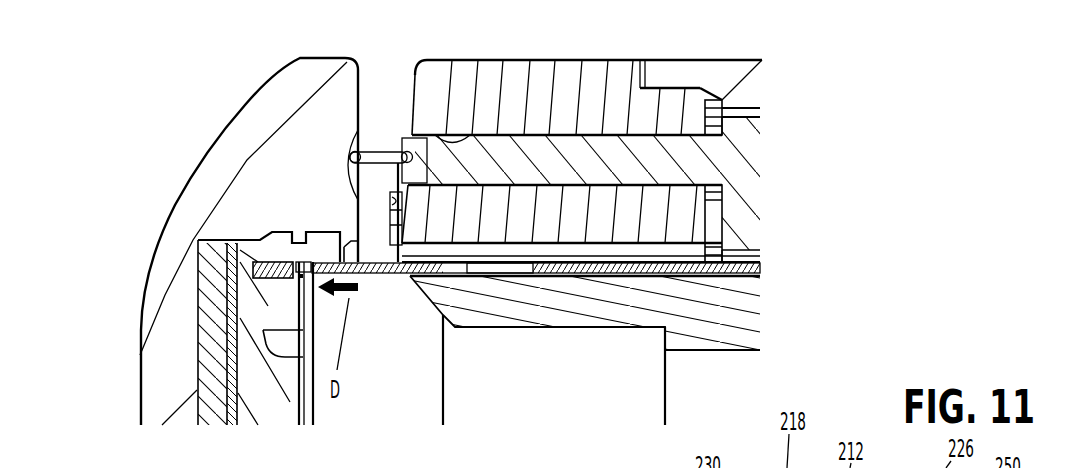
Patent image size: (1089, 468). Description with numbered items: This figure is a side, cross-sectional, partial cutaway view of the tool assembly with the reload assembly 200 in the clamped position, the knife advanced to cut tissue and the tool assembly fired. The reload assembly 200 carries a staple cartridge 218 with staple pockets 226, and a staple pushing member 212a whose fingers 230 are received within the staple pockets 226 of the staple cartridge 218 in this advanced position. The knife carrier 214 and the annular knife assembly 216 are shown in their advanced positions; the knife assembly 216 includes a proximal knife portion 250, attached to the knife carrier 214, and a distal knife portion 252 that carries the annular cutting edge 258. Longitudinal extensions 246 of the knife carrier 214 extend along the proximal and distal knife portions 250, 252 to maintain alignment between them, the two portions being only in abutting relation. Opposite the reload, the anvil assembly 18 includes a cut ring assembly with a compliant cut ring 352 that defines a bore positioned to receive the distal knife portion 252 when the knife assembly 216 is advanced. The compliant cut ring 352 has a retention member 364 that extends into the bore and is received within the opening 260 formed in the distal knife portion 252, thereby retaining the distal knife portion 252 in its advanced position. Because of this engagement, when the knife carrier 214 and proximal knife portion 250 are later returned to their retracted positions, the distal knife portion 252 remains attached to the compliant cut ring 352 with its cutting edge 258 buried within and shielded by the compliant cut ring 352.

The anvil assembly 18 is at (206, 146).
The reload assembly 200 is at (597, 57).
The staple pushing member 212a is at (737, 152).
The knife carrier 214 is at (755, 314).
The knife assembly 216 is at (489, 280).
The staple cartridge 218 is at (470, 60).
The staple pockets 226 is at (470, 133).
The fingers 230 is at (525, 160).
The longitudinal extensions 246 is at (533, 330).
The proximal knife portion 250 is at (645, 90).
The distal knife portion 252 is at (381, 288).
The cutting edge 258 is at (253, 265).
The opening 260 is at (306, 270).
The compliant cut ring 352 is at (277, 402).
The retention member 364 is at (303, 278).